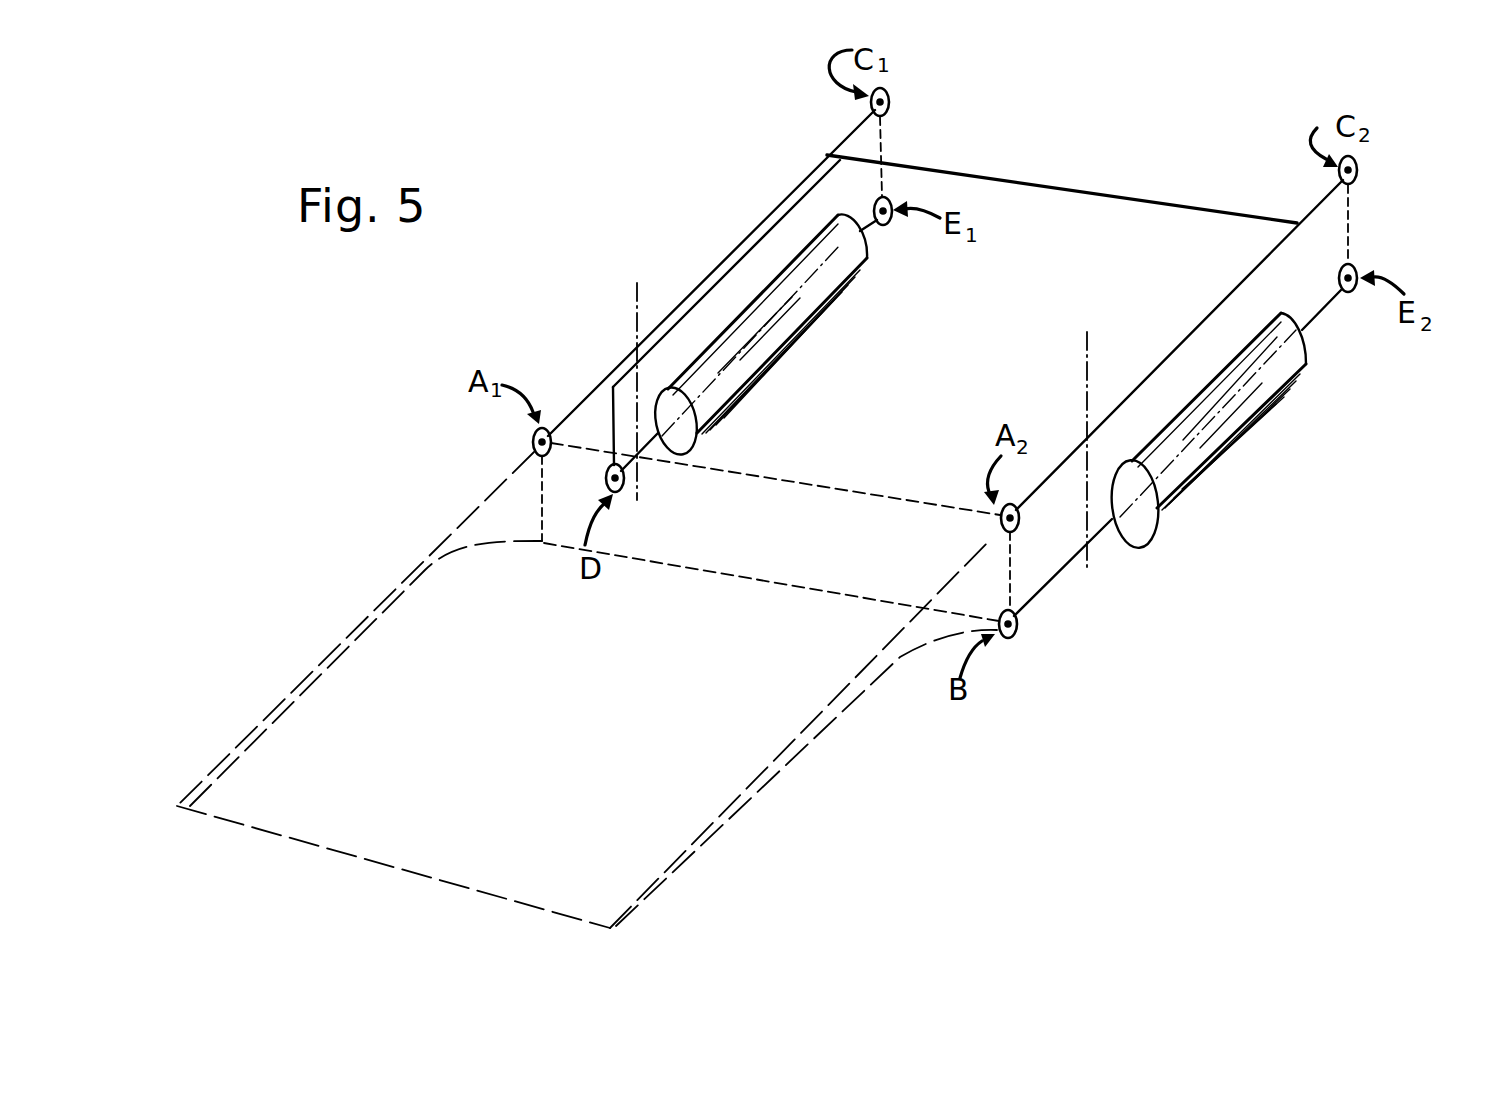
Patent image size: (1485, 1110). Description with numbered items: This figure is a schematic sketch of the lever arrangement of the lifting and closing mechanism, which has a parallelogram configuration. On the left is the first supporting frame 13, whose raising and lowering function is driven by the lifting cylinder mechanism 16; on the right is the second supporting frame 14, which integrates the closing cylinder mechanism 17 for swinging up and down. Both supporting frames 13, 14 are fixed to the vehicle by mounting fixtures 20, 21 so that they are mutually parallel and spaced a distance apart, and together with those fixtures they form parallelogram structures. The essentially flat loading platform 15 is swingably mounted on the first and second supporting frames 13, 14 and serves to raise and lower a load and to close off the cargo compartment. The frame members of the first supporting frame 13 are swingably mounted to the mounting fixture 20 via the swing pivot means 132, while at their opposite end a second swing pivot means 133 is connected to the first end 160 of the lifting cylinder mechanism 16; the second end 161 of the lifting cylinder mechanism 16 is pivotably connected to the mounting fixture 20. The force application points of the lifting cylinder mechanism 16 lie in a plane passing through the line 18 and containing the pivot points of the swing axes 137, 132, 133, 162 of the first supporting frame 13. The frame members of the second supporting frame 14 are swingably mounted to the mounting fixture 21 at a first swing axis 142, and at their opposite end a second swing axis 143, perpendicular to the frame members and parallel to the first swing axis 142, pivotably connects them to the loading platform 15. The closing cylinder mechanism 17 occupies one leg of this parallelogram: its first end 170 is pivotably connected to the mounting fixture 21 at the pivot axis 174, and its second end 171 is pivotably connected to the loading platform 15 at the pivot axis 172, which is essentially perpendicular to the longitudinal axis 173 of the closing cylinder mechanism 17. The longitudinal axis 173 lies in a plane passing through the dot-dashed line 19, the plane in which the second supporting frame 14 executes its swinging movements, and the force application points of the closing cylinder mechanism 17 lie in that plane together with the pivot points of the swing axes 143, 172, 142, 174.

The first supporting frame 13 is at (780, 214).
The second supporting frame 14 is at (1092, 433).
The loading platform 15 is at (693, 778).
The lifting cylinder mechanism 16 is at (757, 327).
The closing cylinder mechanism 17 is at (1185, 465).
The line 18 is at (636, 300).
The line 19 is at (1083, 408).
The mounting fixture 20 is at (882, 141).
The mounting fixture 21 is at (1349, 227).
The swing pivot means 132 is at (870, 102).
The second swing pivot means 133 is at (608, 470).
The swing axis 137 is at (533, 442).
The first swing axis 142 is at (1358, 171).
The second swing axis 143 is at (1022, 526).
The first end 160 is at (618, 464).
The second end 161 is at (868, 221).
The swing axis 162 is at (889, 200).
The first end 170 is at (1330, 303).
The second end 171 is at (1018, 624).
The pivot axis 172 is at (1007, 640).
The longitudinal axis 173 is at (1233, 402).
The pivot axis 174 is at (1353, 273).